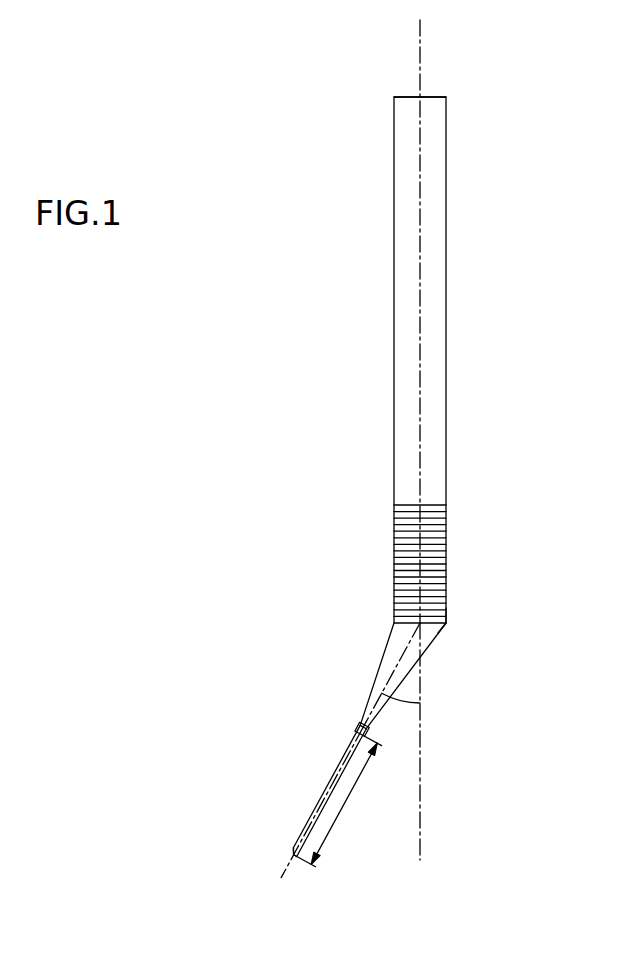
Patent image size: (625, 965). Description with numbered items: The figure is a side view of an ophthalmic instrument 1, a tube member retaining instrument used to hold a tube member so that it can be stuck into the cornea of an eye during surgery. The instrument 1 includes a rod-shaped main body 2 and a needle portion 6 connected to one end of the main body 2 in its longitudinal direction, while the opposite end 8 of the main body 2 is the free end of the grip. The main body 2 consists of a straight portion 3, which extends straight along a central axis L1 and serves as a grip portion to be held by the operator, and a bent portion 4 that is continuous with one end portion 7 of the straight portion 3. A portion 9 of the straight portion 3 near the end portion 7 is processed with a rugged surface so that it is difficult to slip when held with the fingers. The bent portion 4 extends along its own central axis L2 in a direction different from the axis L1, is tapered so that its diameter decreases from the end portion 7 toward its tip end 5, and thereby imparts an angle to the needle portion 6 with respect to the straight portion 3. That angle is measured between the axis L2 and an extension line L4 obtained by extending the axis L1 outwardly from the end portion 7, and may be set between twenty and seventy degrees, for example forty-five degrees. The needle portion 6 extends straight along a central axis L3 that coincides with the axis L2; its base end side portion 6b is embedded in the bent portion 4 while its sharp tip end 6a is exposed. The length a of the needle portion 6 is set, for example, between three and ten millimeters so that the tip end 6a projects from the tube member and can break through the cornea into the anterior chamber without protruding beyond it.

The instrument 1 is at (287, 113).
The main body 2 is at (280, 400).
The straight portion 3 is at (394, 340).
The bent portion 4 is at (384, 653).
The tip end of the bent portion 5 is at (357, 722).
The needle portion 6 is at (329, 782).
The tip end of the needle portion 6a is at (294, 858).
The base end side portion of the needle portion 6b is at (384, 735).
The end portion of the straight portion 7 is at (446, 628).
The proximal end 8 is at (430, 97).
The portion subjected to anti-slip processing 9 is at (430, 553).
The central axis of the straight portion L1 is at (420, 218).
The central axis of the bent portion L2 is at (402, 655).
The central axis of the needle portion L3 is at (326, 795).
The extension line L4 is at (421, 753).
The length of the needle portion a is at (338, 801).